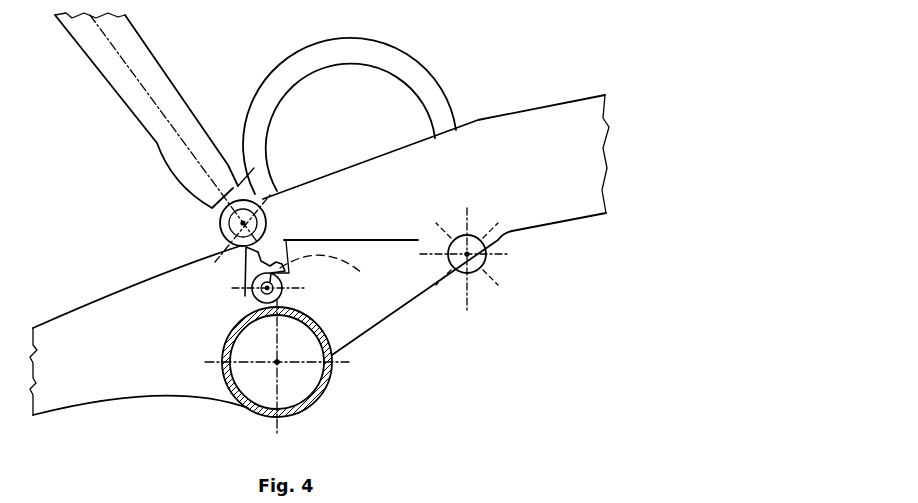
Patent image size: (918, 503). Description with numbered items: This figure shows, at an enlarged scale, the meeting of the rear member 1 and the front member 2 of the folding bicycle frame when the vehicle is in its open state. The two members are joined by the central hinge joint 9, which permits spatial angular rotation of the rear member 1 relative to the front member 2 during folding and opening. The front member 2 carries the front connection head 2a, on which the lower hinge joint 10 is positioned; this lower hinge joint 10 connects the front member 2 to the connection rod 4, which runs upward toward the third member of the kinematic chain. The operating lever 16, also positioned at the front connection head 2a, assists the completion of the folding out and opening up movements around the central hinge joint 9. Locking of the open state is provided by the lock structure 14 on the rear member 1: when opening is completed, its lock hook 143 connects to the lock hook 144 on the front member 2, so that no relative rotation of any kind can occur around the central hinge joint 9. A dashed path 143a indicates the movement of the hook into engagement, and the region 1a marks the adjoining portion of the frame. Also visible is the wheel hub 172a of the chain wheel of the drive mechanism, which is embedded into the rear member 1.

The rear member 1 is at (112, 355).
The frame portion 1a is at (380, 275).
The front member 2 is at (547, 205).
The front connection head 2a is at (418, 240).
The connection rod 4 is at (155, 143).
The central hinge joint 9 is at (473, 271).
The lower hinge joint 10 is at (243, 223).
The lock structure 14 is at (257, 299).
The operating lever 16 is at (422, 108).
The lock hook 143 is at (243, 268).
The hook path 143a is at (308, 275).
The lock hook 144 is at (277, 257).
The wheel hub 172a is at (277, 362).